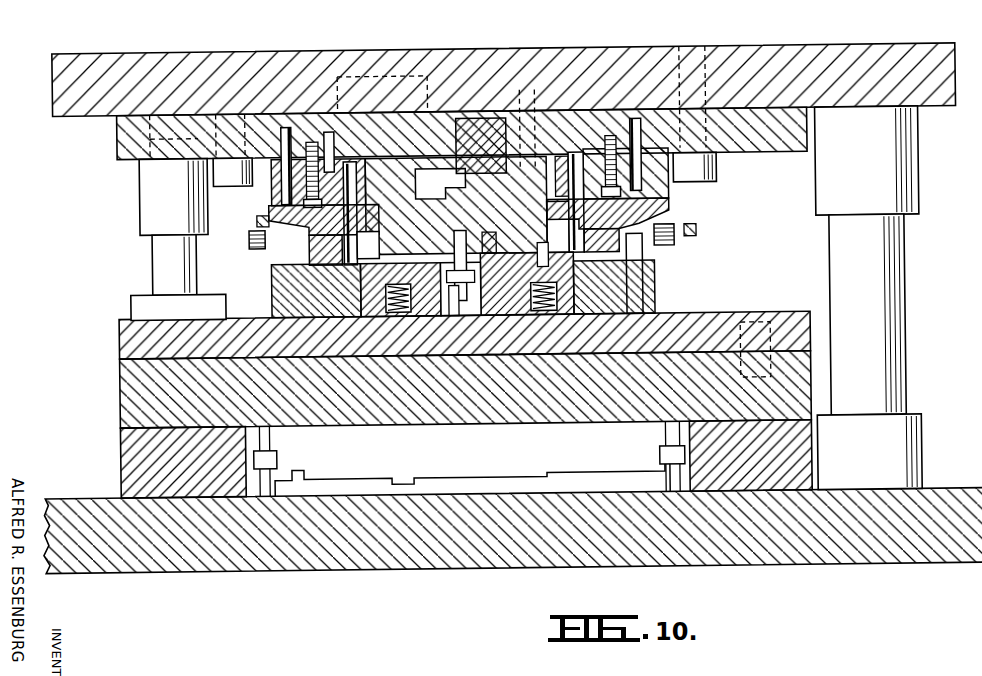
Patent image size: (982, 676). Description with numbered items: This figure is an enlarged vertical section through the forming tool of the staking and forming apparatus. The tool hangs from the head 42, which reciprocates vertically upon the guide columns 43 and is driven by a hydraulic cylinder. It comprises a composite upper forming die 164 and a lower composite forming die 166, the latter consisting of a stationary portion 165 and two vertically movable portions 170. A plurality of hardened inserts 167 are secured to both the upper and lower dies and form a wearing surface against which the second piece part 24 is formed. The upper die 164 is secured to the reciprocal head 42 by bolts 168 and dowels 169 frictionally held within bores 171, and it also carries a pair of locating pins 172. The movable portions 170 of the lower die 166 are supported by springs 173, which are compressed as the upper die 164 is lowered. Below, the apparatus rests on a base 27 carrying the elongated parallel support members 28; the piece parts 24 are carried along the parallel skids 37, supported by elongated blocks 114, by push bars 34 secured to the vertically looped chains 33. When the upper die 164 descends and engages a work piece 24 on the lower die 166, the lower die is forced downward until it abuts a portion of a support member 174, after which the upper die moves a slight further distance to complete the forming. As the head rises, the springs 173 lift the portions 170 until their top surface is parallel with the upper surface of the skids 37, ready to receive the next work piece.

The second piece part 24 is at (505, 200).
The base 27 is at (118, 548).
The support member 28 is at (137, 445).
The chain 33 is at (257, 220).
The push bar 34 is at (282, 205).
The skid 37 is at (307, 231).
The head 42 is at (66, 70).
The guide column 43 is at (166, 269).
The elongated block 114 is at (317, 248).
The upper forming die 164 is at (462, 168).
The stationary portion 165 is at (482, 292).
The lower forming die 166 is at (522, 333).
The hardened insert 167 is at (453, 291).
The bolt 168 is at (331, 130).
The dowel 169 is at (314, 139).
The movable portion 170 is at (380, 294).
The bore 171 is at (289, 124).
The locating pin 172 is at (356, 158).
The spring 173 is at (396, 291).
The support member 174 is at (138, 368).